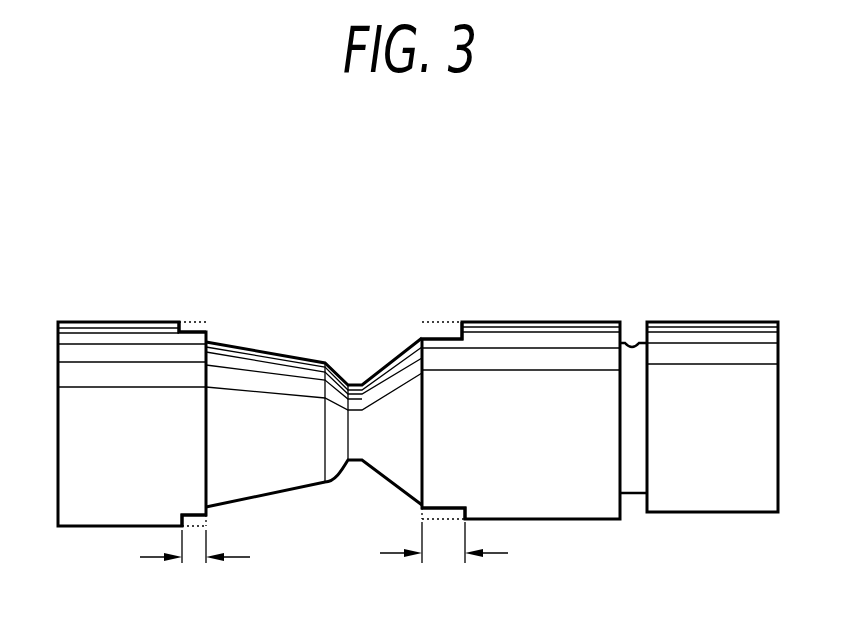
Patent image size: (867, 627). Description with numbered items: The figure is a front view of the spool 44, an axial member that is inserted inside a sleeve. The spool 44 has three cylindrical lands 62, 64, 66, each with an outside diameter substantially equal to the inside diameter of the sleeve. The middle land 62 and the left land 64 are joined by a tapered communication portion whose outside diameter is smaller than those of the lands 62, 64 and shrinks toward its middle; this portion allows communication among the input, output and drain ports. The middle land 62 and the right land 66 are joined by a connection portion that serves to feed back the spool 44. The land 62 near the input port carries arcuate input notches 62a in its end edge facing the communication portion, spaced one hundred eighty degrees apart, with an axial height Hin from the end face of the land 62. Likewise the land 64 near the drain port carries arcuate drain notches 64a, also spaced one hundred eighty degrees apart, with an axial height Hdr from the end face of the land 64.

The spool 44 is at (293, 225).
The land 62 is at (535, 519).
The input notches 62a is at (452, 506).
The land 64 is at (125, 526).
The drain notches 64a is at (193, 330).
The land 66 is at (715, 512).
The height of the drain notches Hdr is at (195, 565).
The height of the input notches Hin is at (444, 559).